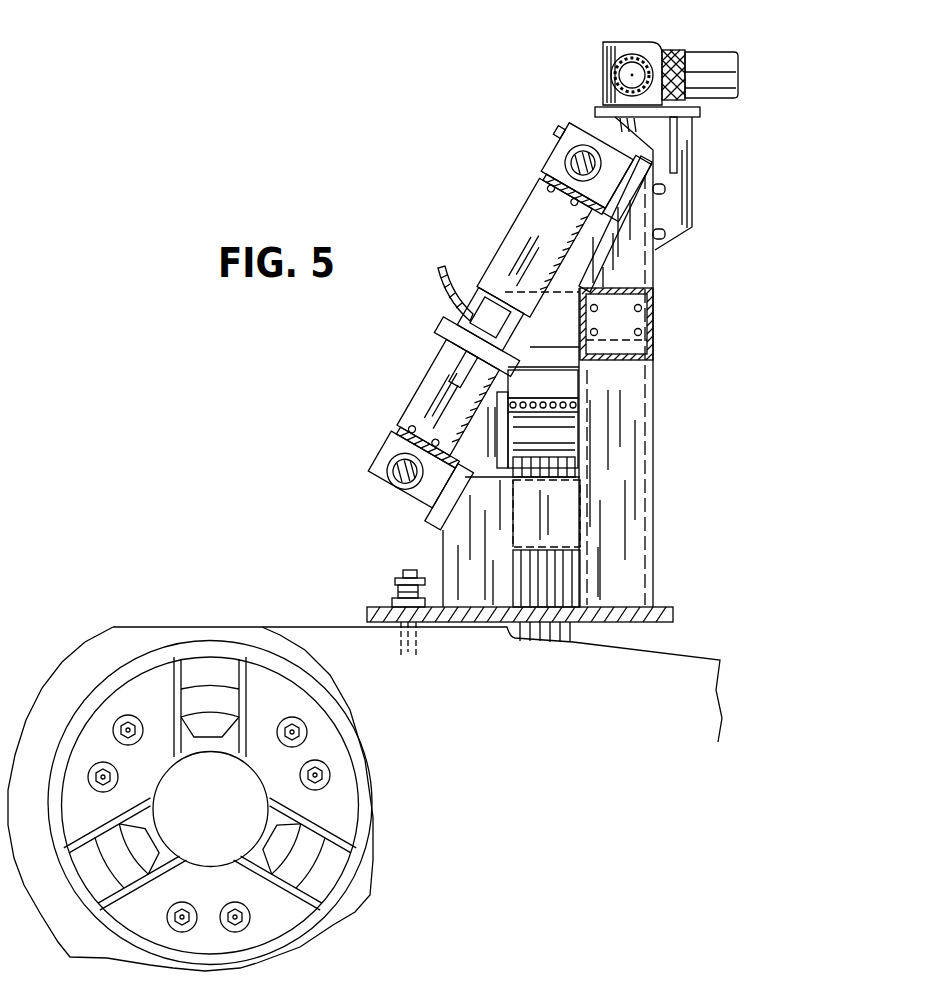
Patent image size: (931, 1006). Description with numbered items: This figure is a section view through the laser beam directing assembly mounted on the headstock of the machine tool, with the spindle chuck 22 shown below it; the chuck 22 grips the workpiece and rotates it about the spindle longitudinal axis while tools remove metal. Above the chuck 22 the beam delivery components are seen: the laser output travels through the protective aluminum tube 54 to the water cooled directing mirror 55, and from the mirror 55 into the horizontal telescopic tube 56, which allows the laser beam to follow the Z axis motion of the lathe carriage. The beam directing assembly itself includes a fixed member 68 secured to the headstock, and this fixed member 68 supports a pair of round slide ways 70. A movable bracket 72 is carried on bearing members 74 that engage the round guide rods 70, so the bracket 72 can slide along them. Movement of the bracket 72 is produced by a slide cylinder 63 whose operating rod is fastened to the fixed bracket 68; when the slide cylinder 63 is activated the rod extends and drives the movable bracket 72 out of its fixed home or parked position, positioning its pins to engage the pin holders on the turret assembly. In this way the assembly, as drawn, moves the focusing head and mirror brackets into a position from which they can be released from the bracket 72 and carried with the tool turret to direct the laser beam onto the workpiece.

The chuck 22 is at (340, 783).
The tube 54 is at (698, 52).
The mirror 55 is at (602, 55).
The telescopic tube 56 is at (631, 52).
The slide cylinder 63 is at (483, 275).
The fixed member 68 is at (383, 609).
The round slide ways 70 is at (575, 157).
The movable bracket 72 is at (437, 372).
The bearing members 74 is at (575, 125).